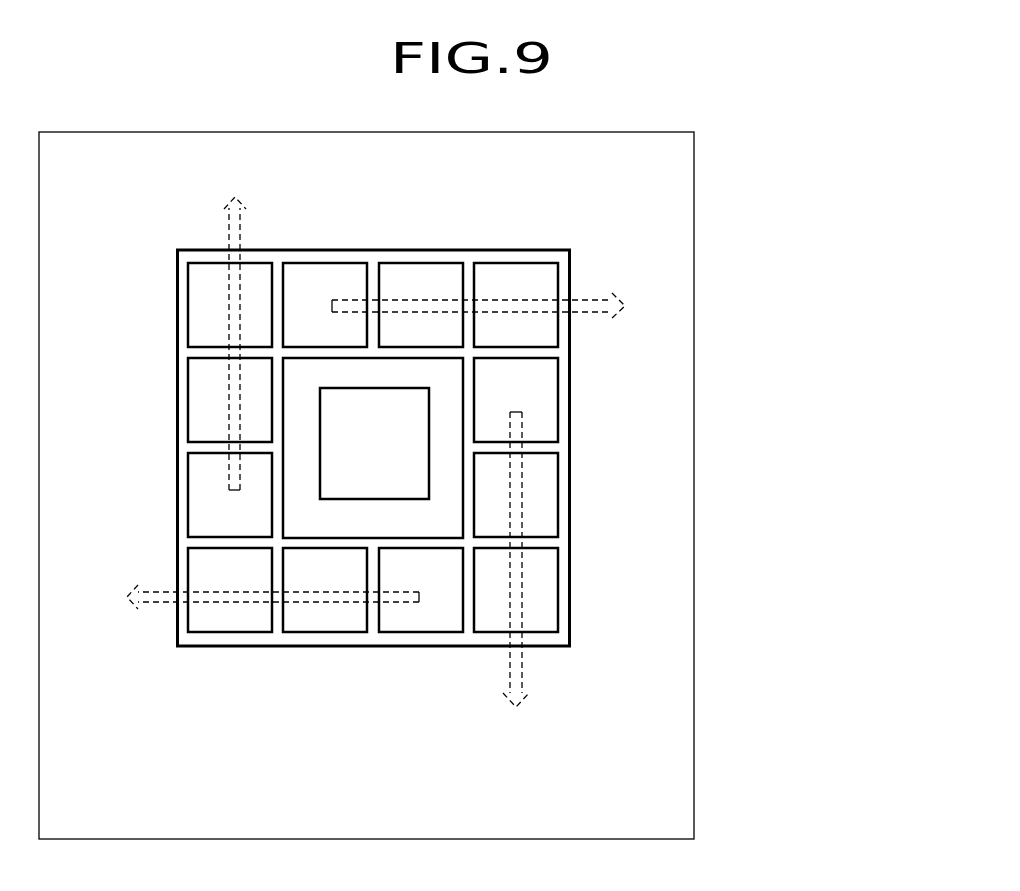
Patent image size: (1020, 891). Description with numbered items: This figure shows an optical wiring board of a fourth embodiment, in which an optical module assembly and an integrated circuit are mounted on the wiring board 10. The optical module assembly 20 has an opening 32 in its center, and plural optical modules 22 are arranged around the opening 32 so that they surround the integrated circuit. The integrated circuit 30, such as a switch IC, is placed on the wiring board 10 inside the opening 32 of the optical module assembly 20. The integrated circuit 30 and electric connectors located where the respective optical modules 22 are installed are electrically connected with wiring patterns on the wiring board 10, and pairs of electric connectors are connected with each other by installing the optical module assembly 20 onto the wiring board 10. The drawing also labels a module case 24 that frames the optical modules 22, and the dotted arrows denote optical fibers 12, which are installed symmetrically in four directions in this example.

The wiring board 10 is at (667, 525).
The optical fiber 12 is at (535, 673).
The optical module assembly 20 is at (147, 232).
The optical modules 22 is at (492, 612).
The module case 24 is at (227, 633).
The integrated circuit 30 is at (380, 420).
The opening 32 is at (440, 462).